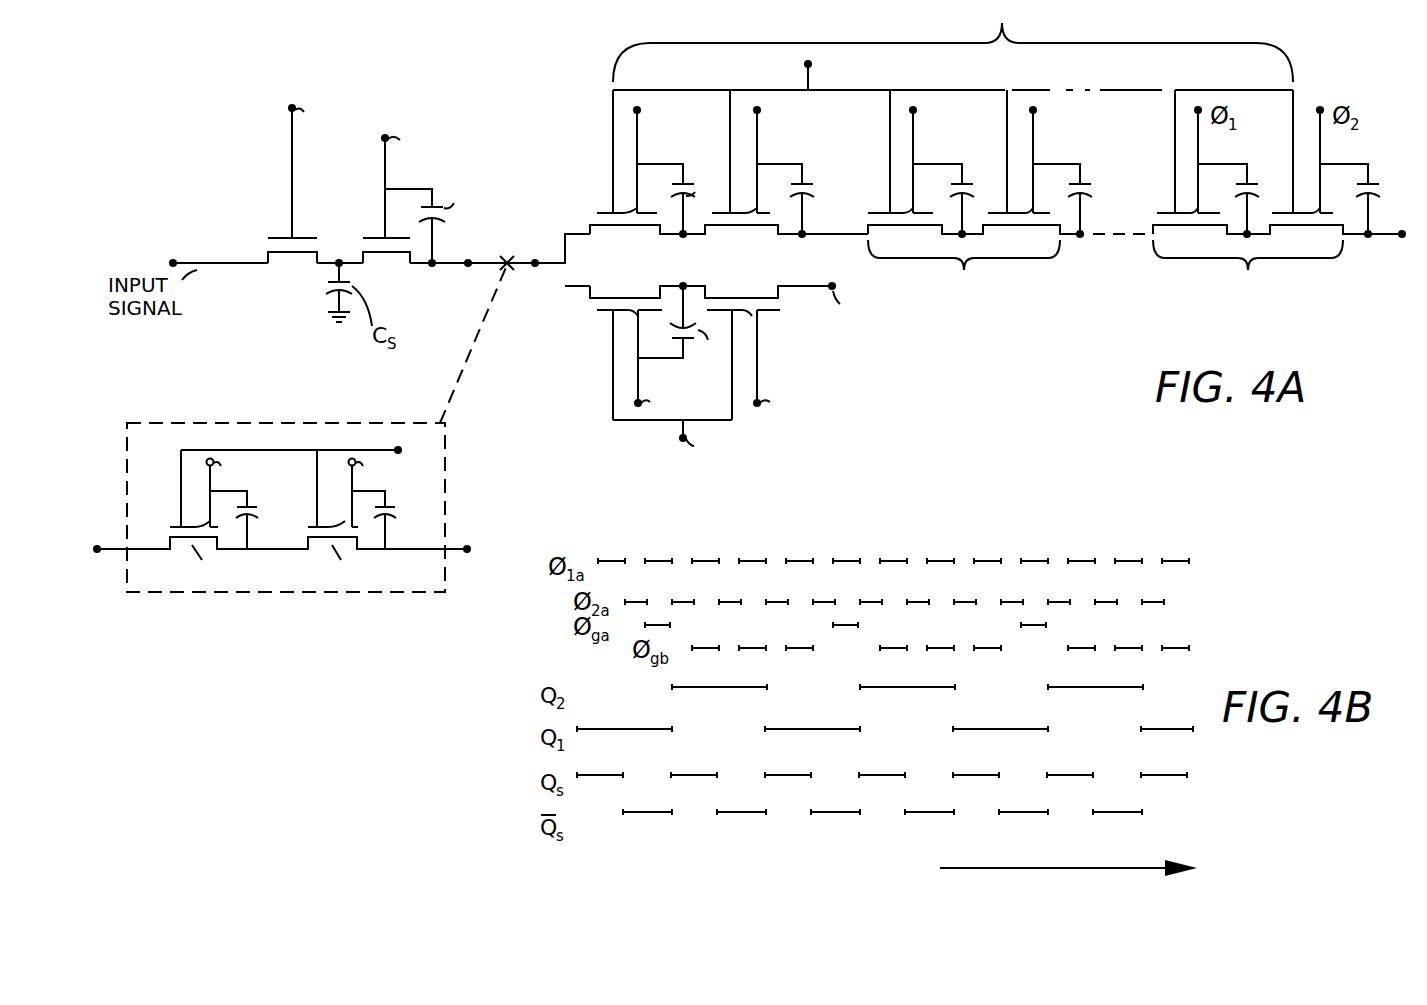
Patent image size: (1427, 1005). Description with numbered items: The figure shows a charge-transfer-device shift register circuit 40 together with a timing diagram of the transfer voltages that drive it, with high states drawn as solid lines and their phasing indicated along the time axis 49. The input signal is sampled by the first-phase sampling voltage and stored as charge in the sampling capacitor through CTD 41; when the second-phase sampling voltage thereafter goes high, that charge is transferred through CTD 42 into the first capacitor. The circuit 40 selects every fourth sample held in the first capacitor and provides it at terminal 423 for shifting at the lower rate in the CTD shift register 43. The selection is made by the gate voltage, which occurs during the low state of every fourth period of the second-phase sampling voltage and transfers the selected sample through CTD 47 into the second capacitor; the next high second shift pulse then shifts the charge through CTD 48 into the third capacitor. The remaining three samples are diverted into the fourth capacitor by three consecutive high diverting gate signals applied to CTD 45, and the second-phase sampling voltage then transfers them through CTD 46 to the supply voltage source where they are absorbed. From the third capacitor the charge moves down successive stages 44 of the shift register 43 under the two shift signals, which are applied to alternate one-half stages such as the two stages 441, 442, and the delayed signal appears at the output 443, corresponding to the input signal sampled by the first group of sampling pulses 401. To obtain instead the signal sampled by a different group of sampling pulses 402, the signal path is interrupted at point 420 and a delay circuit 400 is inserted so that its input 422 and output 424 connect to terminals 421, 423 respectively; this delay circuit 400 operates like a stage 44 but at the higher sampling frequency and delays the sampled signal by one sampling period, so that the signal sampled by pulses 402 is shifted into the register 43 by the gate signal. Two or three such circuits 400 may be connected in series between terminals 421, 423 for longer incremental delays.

In FIG. 4A, the CTD shift register circuit 40 is at (972, 359).
In FIG. 4A, the CTD 41 is at (296, 262).
In FIG. 4A, the CTD 42 is at (386, 268).
In FIG. 4A, the CTD shift register 43 is at (953, 106).
In FIG. 4A, the stage 44 is at (1105, 270).
In FIG. 4A, the CTD 45 is at (630, 272).
In FIG. 4A, the CTD 46 is at (736, 272).
In FIG. 4A, the CTD 47 is at (626, 239).
In FIG. 4A, the CTD 48 is at (745, 239).
In FIG. 4B, the time axis 49 is at (1097, 872).
In FIG. 4A, the delay circuit 400 is at (378, 592).
In FIG. 4B, the Ø1a pulses 401 is at (1170, 557).
In FIG. 4B, the Ø1a pulses 402 is at (1133, 558).
In FIG. 4A, the point 420 is at (509, 257).
In FIG. 4A, the terminal 421 is at (468, 268).
In FIG. 4A, the input 422 is at (96, 548).
In FIG. 4A, the terminal 423 is at (536, 268).
In FIG. 4A, the output 424 is at (467, 548).
In FIG. 4A, the stage 441 is at (897, 239).
In FIG. 4A, the stage 442 is at (1012, 239).
In FIG. 4A, the output 443 is at (1408, 243).